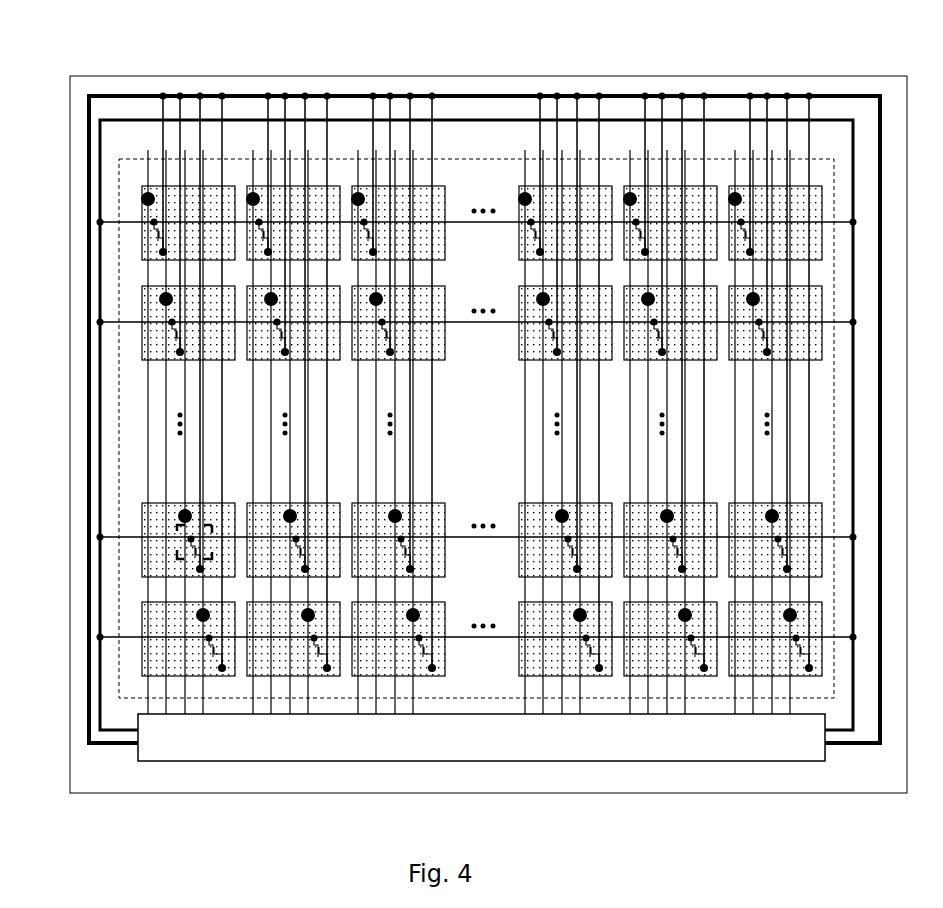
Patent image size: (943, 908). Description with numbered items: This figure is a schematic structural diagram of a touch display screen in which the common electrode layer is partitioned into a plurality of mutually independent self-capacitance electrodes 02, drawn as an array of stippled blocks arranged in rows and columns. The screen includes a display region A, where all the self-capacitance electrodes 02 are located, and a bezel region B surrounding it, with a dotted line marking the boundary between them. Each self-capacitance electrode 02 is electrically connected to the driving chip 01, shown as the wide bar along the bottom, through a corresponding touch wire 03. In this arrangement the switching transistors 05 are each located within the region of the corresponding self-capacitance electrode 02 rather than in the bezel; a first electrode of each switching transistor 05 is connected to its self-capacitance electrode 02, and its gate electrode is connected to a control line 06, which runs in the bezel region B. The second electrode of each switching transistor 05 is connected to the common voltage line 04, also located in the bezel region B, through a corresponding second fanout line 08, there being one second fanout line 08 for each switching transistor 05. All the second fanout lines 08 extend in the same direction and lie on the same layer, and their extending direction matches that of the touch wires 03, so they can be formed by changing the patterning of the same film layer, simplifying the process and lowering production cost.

The driving chip 01 is at (492, 761).
The self-capacitance electrode 02 is at (141, 240).
The touch wire 03 is at (147, 393).
The common voltage line 04 is at (97, 94).
The switching transistor 05 is at (177, 553).
The control line 06 is at (124, 118).
The second fanout line 08 is at (223, 133).
The display region A is at (462, 178).
The bezel region B is at (491, 137).